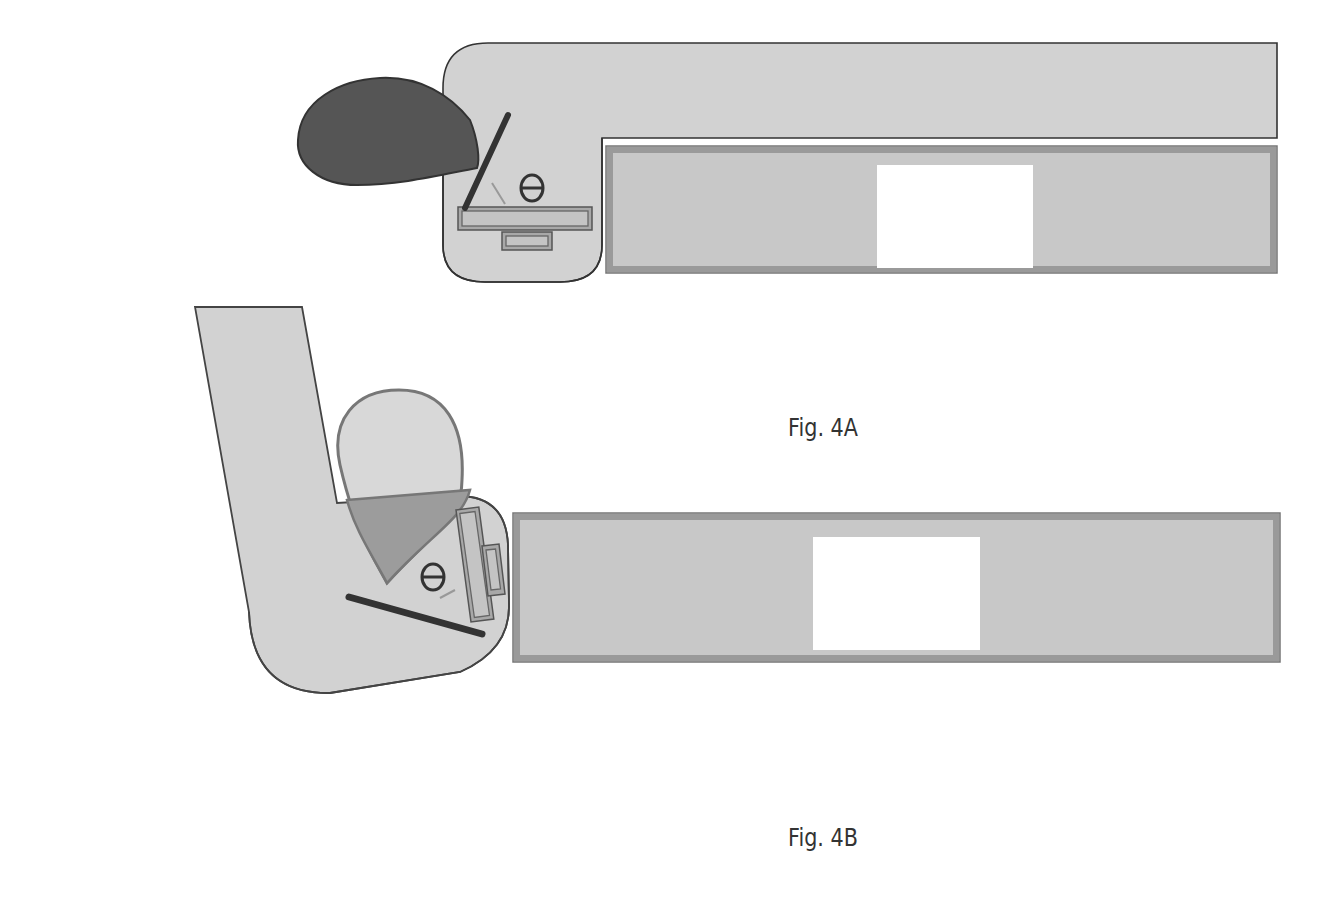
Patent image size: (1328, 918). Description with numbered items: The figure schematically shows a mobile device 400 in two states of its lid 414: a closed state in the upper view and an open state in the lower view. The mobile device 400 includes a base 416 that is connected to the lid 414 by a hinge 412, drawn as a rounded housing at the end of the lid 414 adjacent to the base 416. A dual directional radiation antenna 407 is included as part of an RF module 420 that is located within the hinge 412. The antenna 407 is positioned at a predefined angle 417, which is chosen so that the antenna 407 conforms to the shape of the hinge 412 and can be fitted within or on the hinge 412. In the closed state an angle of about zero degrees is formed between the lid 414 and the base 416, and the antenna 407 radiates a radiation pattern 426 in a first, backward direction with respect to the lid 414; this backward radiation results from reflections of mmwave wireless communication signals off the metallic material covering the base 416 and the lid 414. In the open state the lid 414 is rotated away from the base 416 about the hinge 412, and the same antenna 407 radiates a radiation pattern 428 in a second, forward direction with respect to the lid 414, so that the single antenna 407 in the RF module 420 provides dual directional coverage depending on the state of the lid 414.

In FIG. 4A, the mobile device 400 is at (1205, 290).
In FIG. 4B, the mobile device 400 is at (1189, 661).
In FIG. 4A, the dual directional radiation antenna 407 is at (507, 115).
In FIG. 4B, the dual directional radiation antenna 407 is at (450, 630).
In FIG. 4A, the hinge 412 is at (522, 285).
In FIG. 4B, the hinge 412 is at (410, 670).
In FIG. 4A, the lid 414 is at (900, 42).
In FIG. 4B, the lid 414 is at (308, 338).
In FIG. 4A, the base 416 is at (860, 273).
In FIG. 4B, the base 416 is at (850, 653).
In FIG. 4A, the predefined angle 417 is at (493, 182).
In FIG. 4B, the predefined angle 417 is at (443, 603).
In FIG. 4A, the RF module 420 is at (481, 258).
In FIG. 4B, the RF module 420 is at (385, 645).
In FIG. 4A, the radiation pattern 426 is at (373, 80).
In FIG. 4B, the radiation pattern 428 is at (442, 432).